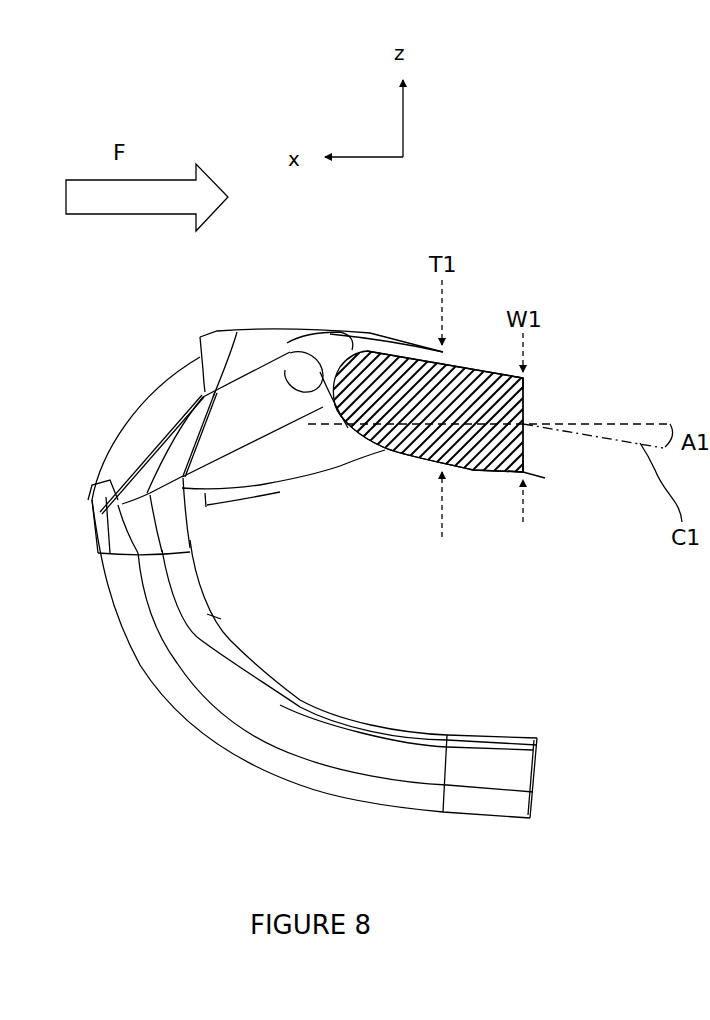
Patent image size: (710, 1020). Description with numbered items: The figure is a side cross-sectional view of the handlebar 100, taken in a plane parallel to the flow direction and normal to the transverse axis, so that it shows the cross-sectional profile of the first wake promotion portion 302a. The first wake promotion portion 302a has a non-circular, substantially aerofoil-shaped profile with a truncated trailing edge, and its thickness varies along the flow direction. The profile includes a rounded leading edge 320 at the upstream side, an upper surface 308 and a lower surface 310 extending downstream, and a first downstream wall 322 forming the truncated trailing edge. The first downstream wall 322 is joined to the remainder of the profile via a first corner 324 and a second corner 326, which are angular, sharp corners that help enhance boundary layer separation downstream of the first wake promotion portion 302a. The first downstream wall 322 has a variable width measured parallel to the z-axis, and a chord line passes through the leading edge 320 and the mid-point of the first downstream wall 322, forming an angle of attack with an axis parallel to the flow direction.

The handlebar 100 is at (354, 278).
The first wake promotion portion 302a is at (385, 472).
The upper surface 308 is at (466, 353).
The lower surface 310 is at (473, 471).
The rounded leading edge 320 is at (315, 388).
The first downstream wall 322 is at (523, 398).
The first corner 324 is at (523, 378).
The second corner 326 is at (523, 472).